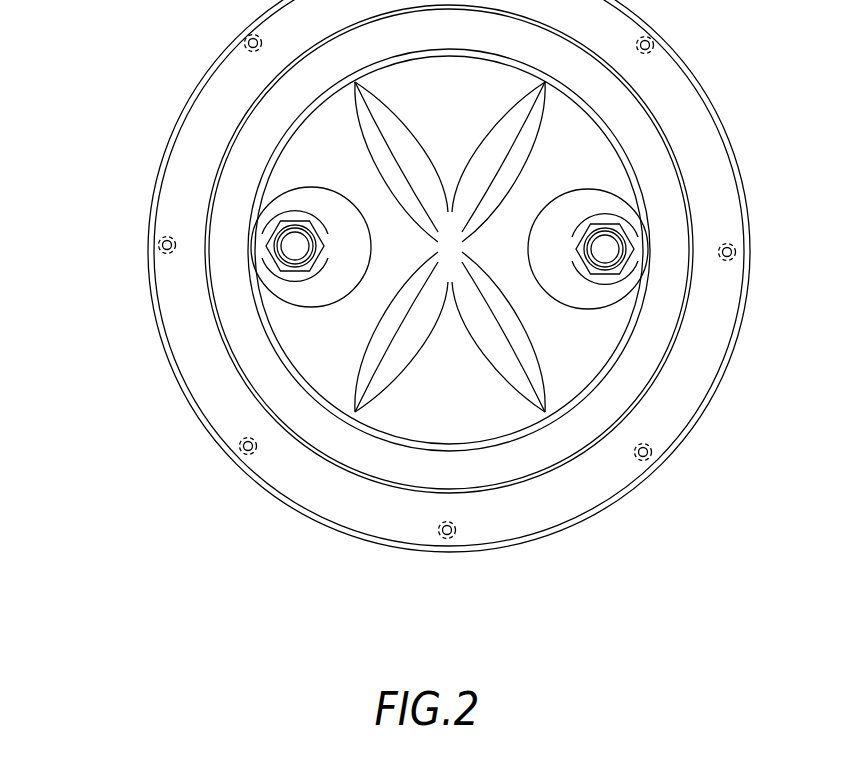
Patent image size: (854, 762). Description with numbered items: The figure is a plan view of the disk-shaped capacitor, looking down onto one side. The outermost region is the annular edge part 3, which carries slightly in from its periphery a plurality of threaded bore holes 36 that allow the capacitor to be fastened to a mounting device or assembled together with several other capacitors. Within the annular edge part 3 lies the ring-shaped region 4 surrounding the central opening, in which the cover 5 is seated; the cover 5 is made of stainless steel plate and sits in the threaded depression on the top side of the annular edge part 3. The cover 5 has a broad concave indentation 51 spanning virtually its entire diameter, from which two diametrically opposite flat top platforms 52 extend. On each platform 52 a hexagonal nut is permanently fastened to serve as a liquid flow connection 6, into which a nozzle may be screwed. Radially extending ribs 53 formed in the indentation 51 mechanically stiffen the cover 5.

The annular edge part 3 is at (348, 510).
The flange ring 4 is at (250, 348).
The cover 5 is at (450, 370).
The concave indentation 51 is at (472, 392).
The flat top platform 52 is at (340, 265).
The rib 53 is at (395, 358).
The liquid flow connection 6 is at (267, 248).
The threaded bore hole 36 is at (162, 243).